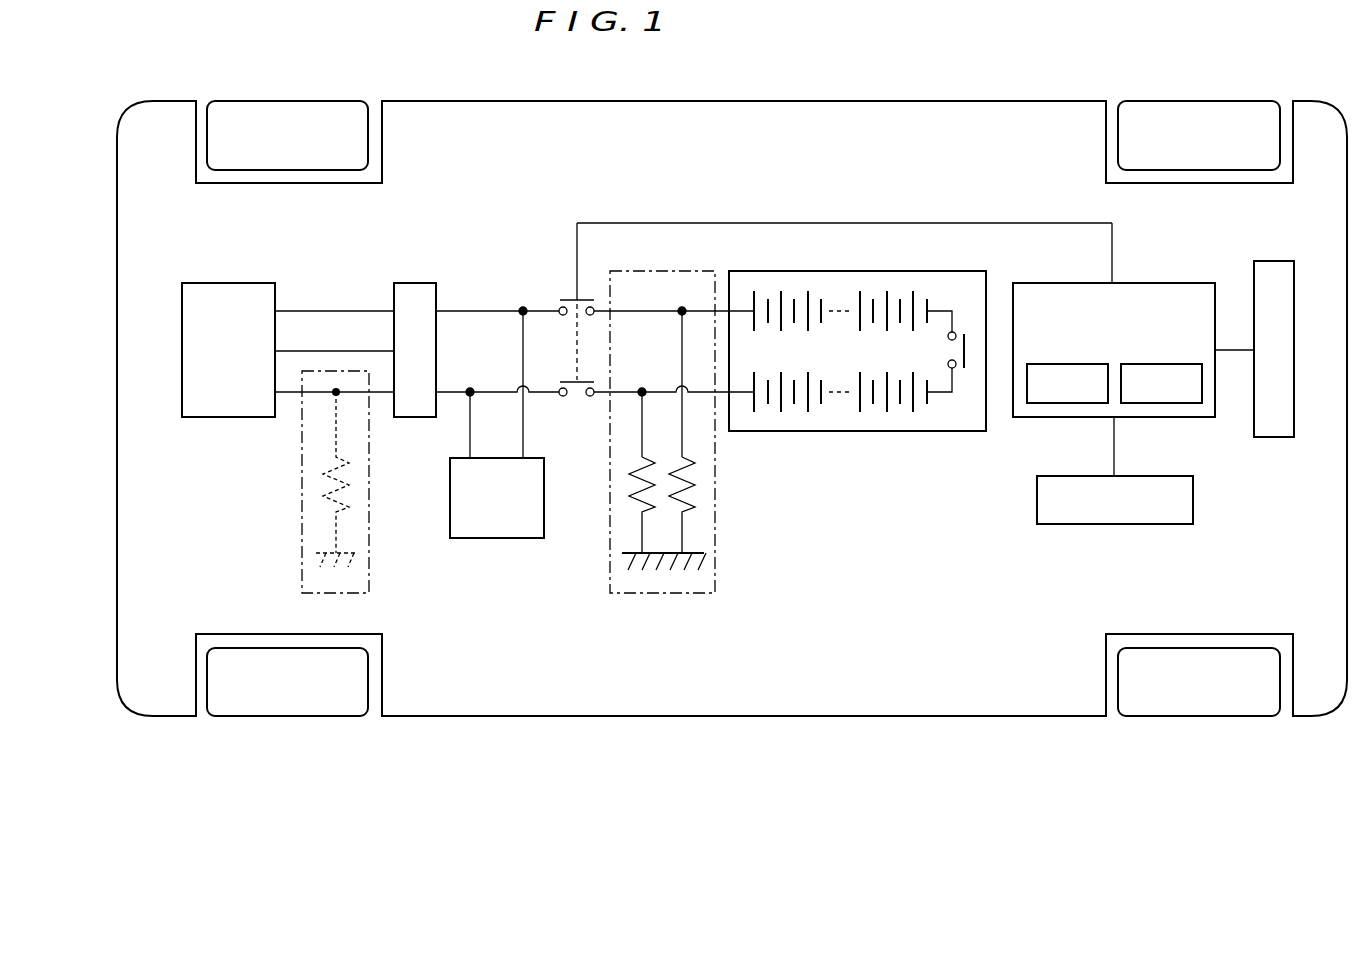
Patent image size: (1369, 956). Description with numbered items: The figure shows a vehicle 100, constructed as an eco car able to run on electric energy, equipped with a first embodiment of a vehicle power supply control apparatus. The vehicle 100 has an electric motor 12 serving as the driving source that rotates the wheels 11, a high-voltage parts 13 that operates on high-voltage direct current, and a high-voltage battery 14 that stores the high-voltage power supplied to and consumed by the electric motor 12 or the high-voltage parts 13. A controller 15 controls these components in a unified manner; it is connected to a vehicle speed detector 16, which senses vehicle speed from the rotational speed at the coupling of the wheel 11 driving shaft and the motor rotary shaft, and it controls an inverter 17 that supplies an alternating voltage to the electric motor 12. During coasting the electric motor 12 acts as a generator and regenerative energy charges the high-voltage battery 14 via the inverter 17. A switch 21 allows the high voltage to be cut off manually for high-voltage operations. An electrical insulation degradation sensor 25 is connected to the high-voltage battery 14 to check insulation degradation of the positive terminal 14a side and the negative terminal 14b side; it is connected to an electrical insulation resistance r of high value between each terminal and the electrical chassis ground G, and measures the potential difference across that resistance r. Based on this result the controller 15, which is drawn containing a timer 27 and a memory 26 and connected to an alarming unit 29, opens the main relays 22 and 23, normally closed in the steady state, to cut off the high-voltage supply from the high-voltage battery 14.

The vehicle 100 is at (743, 100).
The wheel 11 is at (288, 100).
The electric motor 12 is at (228, 282).
The high-voltage parts 13 is at (450, 497).
The high-voltage battery 14 is at (854, 348).
The positive terminal 14a is at (754, 306).
The negative terminal 14b is at (745, 400).
The controller 15 is at (1114, 323).
The vehicle speed detector 16 is at (1193, 493).
The inverter 17 is at (417, 282).
The switch 21 is at (964, 347).
The main relay 22 is at (573, 298).
The main relay 23 is at (573, 380).
The electrical insulation degradation sensor 25 is at (494, 432).
The memory 26 is at (1147, 363).
The timer 27 is at (1053, 363).
The alarming unit 29 is at (1275, 261).
The electrical insulation resistance r is at (640, 480).
The electrical chassis ground G is at (690, 552).